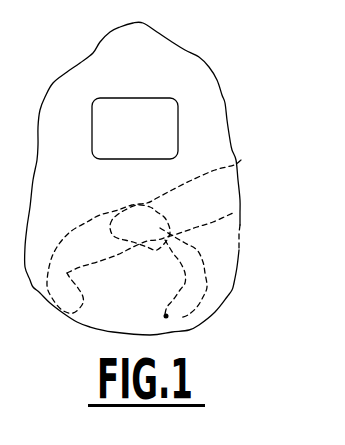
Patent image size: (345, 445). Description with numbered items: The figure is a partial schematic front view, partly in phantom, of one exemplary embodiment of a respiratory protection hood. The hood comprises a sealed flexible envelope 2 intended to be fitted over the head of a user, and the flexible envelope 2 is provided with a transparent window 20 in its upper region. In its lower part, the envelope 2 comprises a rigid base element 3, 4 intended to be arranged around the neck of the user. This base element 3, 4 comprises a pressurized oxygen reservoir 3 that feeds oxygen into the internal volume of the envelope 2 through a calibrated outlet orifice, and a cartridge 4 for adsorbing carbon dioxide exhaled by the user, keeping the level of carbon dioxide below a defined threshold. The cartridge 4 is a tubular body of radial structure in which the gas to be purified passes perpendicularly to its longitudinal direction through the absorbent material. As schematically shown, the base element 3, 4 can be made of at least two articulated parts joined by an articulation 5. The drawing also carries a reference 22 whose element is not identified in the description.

The protective pad body 2 is at (227, 98).
The opening 20 is at (98, 117).
The outer contour of strap 5 is at (243, 160).
The inner contour of strap 3 is at (235, 212).
The reinforcing element 4 is at (199, 277).
The fastening point 22 is at (185, 333).